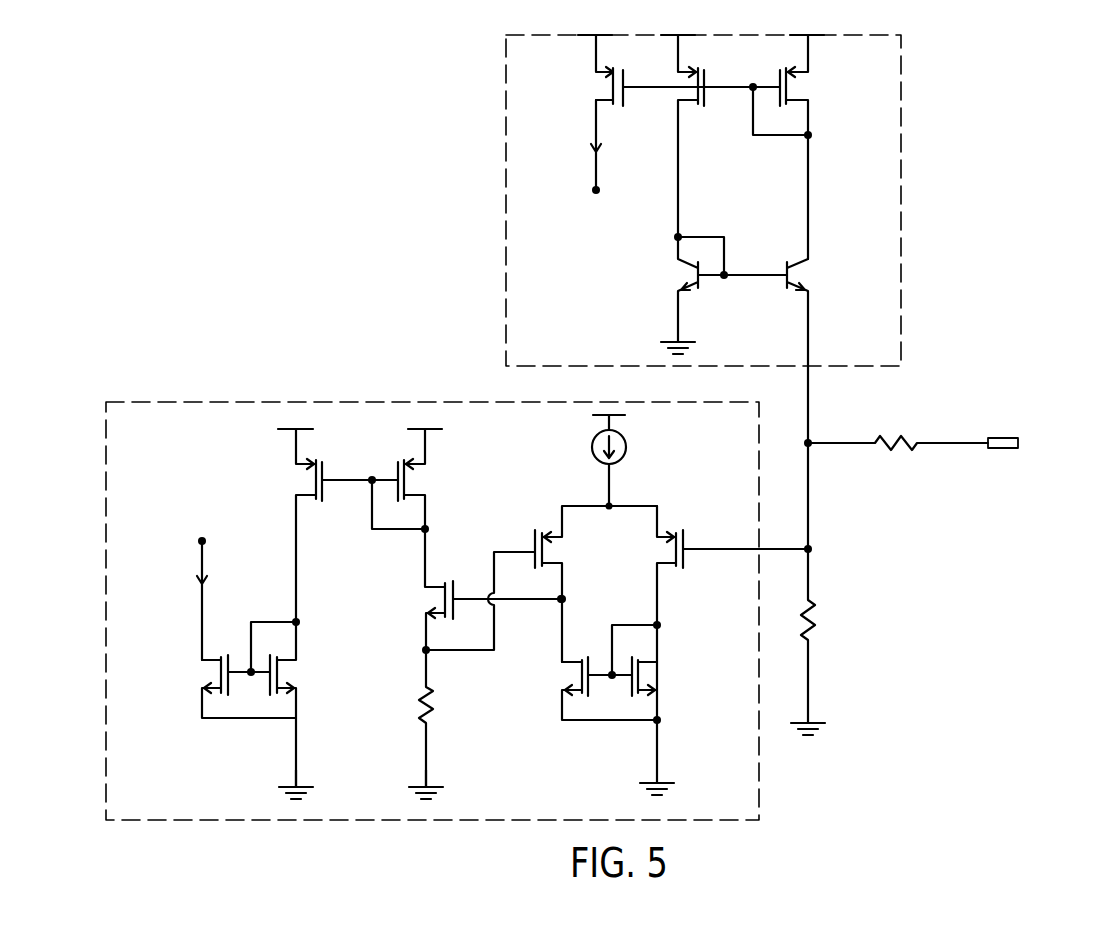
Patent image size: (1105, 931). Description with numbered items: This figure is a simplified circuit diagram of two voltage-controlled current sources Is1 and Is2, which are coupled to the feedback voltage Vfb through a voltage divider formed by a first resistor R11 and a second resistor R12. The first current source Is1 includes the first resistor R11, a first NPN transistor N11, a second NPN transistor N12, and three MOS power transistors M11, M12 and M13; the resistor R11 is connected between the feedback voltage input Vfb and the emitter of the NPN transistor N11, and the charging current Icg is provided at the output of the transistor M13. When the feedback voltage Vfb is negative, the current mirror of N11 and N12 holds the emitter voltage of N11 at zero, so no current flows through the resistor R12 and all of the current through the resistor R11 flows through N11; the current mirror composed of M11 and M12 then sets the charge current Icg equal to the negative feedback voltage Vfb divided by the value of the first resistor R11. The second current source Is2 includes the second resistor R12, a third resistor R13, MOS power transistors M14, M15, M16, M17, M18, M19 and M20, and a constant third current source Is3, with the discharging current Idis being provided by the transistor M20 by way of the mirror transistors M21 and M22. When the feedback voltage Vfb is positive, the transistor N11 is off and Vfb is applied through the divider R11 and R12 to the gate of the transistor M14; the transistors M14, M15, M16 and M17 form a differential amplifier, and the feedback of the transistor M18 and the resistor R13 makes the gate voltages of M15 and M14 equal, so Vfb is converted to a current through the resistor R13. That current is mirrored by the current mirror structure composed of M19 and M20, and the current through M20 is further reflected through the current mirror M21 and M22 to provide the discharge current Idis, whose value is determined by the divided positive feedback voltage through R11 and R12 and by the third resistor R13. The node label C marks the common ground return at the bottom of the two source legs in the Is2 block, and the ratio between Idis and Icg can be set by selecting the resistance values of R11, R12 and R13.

The first voltage-controlled current source Is1 is at (504, 133).
The second voltage-controlled current source Is2 is at (280, 402).
The third current source Is3 is at (592, 462).
The first MOS power transistor M11 is at (812, 147).
The second MOS power transistor M12 is at (701, 136).
The third MOS power transistor M13 is at (585, 70).
The fourth MOS power transistor M14 is at (732, 613).
The fifth MOS power transistor M15 is at (541, 584).
The sixth MOS power transistor M16 is at (676, 726).
The seventh MOS power transistor M17 is at (587, 672).
The eighth MOS power transistor M18 is at (471, 615).
The ninth MOS power transistor M19 is at (428, 508).
The tenth MOS power transistor M20 is at (325, 525).
The current mirror transistor M21 is at (314, 710).
The current mirror transistor M22 is at (226, 668).
The first NPN transistor N11 is at (830, 349).
The second NPN transistor N12 is at (707, 293).
The first resistor R11 is at (896, 424).
The second resistor R12 is at (834, 589).
The third resistor R13 is at (405, 722).
The charging current Icg is at (573, 147).
The discharging current Idis is at (182, 598).
The feedback voltage Vfb is at (1023, 427).
The node C is at (380, 766).